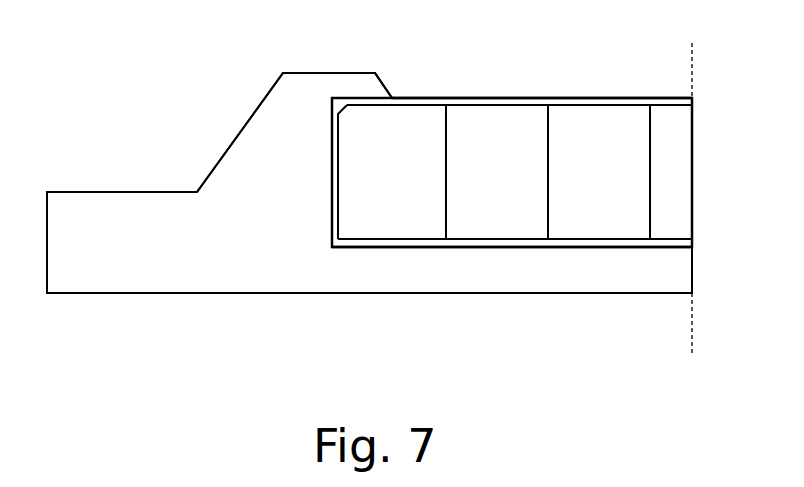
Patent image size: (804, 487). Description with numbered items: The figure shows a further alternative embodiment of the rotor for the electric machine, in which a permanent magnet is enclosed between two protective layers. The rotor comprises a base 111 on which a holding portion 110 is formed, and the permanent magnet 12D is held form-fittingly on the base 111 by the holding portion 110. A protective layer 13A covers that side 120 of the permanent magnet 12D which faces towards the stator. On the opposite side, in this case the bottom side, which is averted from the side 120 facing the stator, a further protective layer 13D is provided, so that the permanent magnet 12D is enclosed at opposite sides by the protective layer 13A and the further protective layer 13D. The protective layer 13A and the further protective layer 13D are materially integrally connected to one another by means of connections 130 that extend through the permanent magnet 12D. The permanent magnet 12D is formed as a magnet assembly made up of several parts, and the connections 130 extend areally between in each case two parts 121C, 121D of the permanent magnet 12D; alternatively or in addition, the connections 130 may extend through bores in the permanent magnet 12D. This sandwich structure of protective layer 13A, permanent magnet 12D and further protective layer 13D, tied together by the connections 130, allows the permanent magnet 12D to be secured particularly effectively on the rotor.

The holding portion 110 is at (265, 144).
The base 111 is at (190, 265).
The side of the permanent magnet facing towards the stator 120 is at (676, 85).
The part of the permanent magnet 121C is at (370, 245).
The part of the permanent magnet 121D is at (483, 135).
The connections 130 is at (547, 138).
The protective layer 13A is at (617, 97).
The permanent magnet 12D is at (503, 223).
The further protective layer 13D is at (608, 247).